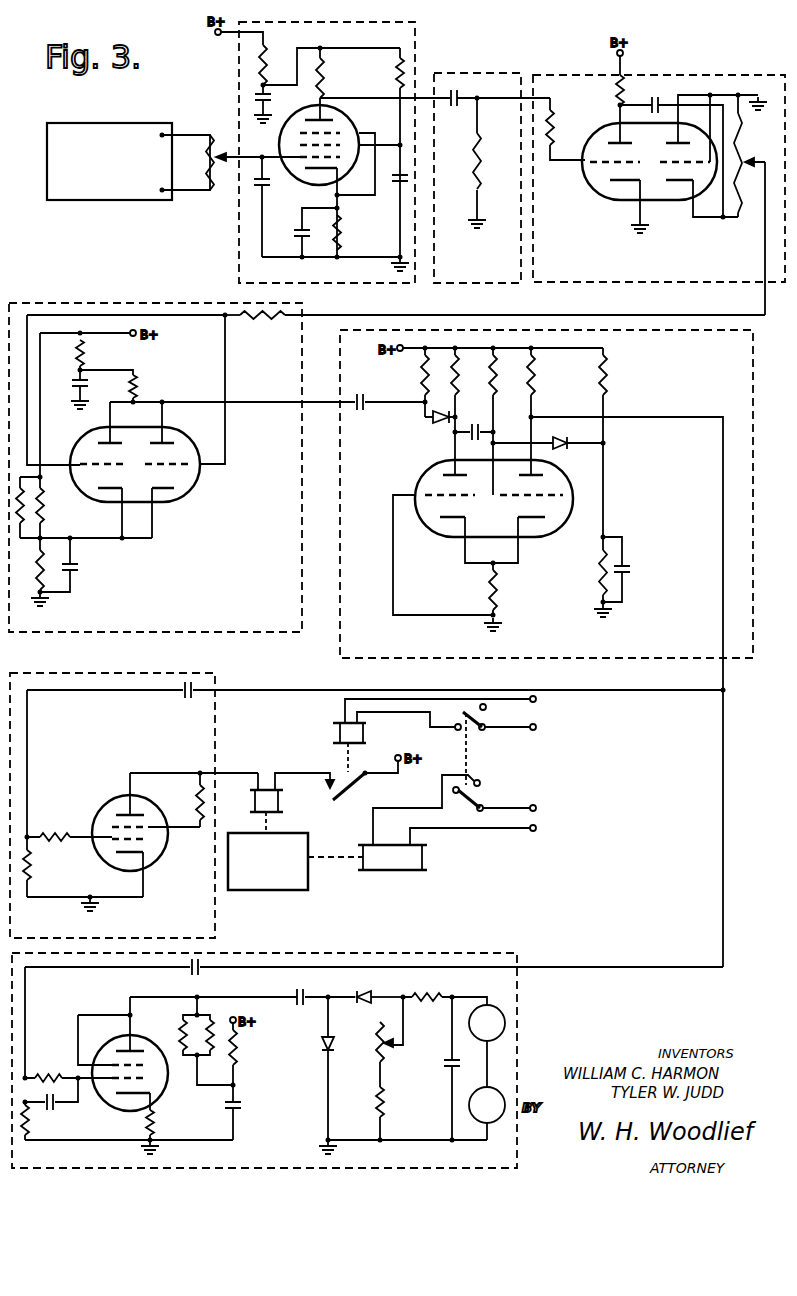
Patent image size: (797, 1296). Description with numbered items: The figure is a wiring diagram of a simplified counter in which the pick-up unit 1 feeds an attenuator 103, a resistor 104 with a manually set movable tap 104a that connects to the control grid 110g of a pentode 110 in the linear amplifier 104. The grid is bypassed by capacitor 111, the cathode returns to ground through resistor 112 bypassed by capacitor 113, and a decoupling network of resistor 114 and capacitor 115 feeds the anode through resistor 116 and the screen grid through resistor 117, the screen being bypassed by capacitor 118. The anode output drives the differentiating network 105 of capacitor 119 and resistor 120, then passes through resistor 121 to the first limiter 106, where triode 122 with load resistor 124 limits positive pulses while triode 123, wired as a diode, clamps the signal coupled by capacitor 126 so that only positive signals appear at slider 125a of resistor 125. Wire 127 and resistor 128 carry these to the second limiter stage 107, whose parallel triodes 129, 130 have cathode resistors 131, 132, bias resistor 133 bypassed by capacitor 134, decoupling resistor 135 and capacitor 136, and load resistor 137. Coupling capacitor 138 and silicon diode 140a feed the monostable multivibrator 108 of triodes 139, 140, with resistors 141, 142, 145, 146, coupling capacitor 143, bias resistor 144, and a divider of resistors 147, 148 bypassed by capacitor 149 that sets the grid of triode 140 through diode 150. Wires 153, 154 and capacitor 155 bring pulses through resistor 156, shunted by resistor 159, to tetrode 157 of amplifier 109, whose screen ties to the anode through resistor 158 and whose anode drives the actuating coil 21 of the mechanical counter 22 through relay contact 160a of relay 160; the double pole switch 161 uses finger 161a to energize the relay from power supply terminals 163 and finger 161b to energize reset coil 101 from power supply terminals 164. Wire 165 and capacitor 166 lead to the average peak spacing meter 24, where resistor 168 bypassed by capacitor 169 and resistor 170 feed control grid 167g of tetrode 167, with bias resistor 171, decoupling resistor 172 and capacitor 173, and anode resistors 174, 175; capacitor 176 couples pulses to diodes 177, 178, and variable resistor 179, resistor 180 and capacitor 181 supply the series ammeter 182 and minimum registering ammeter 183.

The pick-up unit 1 is at (140, 120).
The actuating coil 21 is at (250, 805).
The mechanical counter 22 is at (294, 890).
The average peak spacing meter 24 is at (517, 1030).
The reset coil 101 is at (386, 872).
The attenuator 103 is at (189, 203).
The linear amplifier 104 is at (205, 161).
The movable tap 104a is at (218, 154).
The differentiating network 105 is at (452, 78).
The first limiter 106 is at (736, 75).
The second limiter stage 107 is at (224, 633).
The monostable multivibrator 108 is at (740, 658).
The amplifier 109 is at (216, 715).
The pentode 110 is at (283, 138).
The control grid 110g is at (307, 167).
The capacitor 111 is at (248, 182).
The resistor 112 is at (342, 235).
The capacitor 113 is at (304, 232).
The resistor 114 is at (268, 60).
The capacitor 115 is at (268, 98).
The resistor 116 is at (324, 74).
The resistor 117 is at (398, 76).
The capacitor 118 is at (397, 186).
The capacitor 119 is at (453, 114).
The resistor 120 is at (481, 160).
The resistor 121 is at (554, 128).
The triode 122 is at (597, 192).
The triode 123 is at (676, 206).
The load resistor 124 is at (614, 94).
The resistor 125 is at (748, 208).
The slider 125a is at (748, 162).
The capacitor 126 is at (669, 83).
The wire 127 is at (648, 318).
The resistor 128 is at (264, 319).
The triode 129 is at (84, 437).
The triode 130 is at (194, 442).
The resistor 131 is at (26, 512).
The resistor 132 is at (46, 502).
The resistor 133 is at (36, 572).
The capacitor 134 is at (81, 567).
The resistor 135 is at (78, 345).
The capacitor 136 is at (72, 392).
The load resistor 137 is at (142, 383).
The coupling capacitor 138 is at (359, 412).
The triode 139 is at (432, 466).
The triode 140 is at (567, 486).
The silicon diode 140a is at (439, 421).
The resistor 141 is at (420, 374).
The resistor 142 is at (473, 371).
The coupling capacitor 143 is at (476, 426).
The bias resistor 144 is at (497, 594).
The resistor 145 is at (498, 366).
The resistor 146 is at (538, 378).
The resistor 147 is at (609, 378).
The resistor 148 is at (598, 578).
The capacitor 149 is at (639, 571).
The silicon diode 150 is at (562, 442).
The wire 153 is at (723, 629).
The wire 154 is at (638, 692).
The coupling capacitor 155 is at (186, 703).
The resistor 156 is at (58, 828).
The tetrode 157 is at (160, 860).
The resistor 158 is at (196, 804).
The resistor 159 is at (32, 868).
The relay 160 is at (333, 737).
The relay contact 160a is at (336, 792).
The double pole switch 161 is at (509, 757).
The finger 161a is at (478, 738).
The finger 161b is at (480, 802).
The power supply terminals 163 is at (546, 727).
The power supply terminals 164 is at (536, 808).
The wire 165 is at (725, 812).
The coupling capacitor 166 is at (199, 979).
The tetrode 167 is at (168, 1048).
The control grid 167g is at (148, 1080).
The resistor 168 is at (51, 1076).
The capacitor 169 is at (56, 1108).
The resistor 170 is at (29, 1125).
The bias resistor 171 is at (155, 1124).
The resistor 172 is at (243, 1056).
The capacitor 173 is at (241, 1113).
The resistor 174 is at (181, 1025).
The resistor 175 is at (214, 1028).
The capacitor 176 is at (302, 998).
The diode 177 is at (370, 998).
The diode 178 is at (320, 1044).
The variable resistor 179 is at (385, 1066).
The resistor 180 is at (430, 998).
The capacitor 181 is at (445, 1074).
The ammeter 182 is at (502, 1015).
The minimum registering ammeter 183 is at (491, 1133).